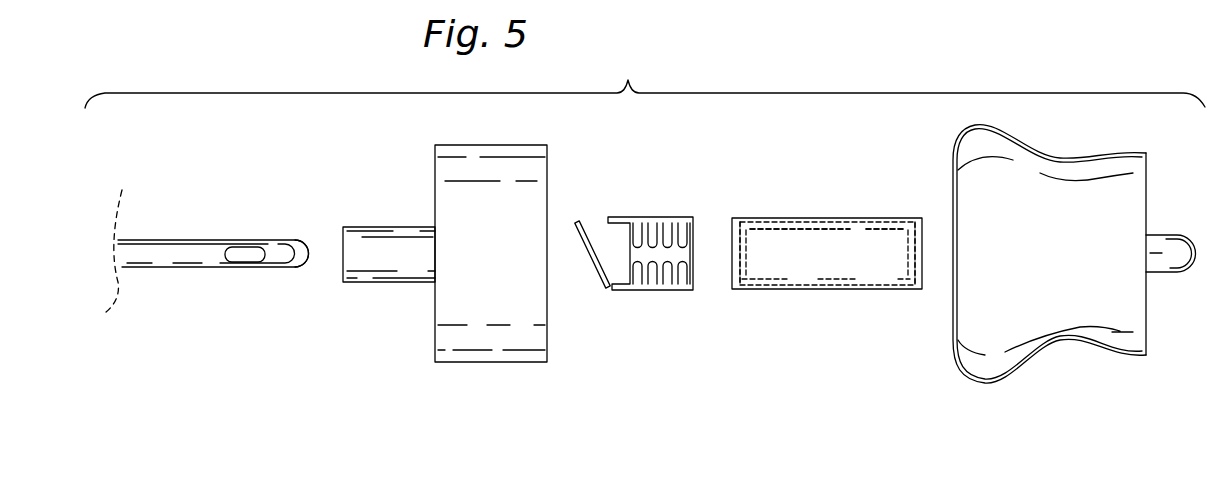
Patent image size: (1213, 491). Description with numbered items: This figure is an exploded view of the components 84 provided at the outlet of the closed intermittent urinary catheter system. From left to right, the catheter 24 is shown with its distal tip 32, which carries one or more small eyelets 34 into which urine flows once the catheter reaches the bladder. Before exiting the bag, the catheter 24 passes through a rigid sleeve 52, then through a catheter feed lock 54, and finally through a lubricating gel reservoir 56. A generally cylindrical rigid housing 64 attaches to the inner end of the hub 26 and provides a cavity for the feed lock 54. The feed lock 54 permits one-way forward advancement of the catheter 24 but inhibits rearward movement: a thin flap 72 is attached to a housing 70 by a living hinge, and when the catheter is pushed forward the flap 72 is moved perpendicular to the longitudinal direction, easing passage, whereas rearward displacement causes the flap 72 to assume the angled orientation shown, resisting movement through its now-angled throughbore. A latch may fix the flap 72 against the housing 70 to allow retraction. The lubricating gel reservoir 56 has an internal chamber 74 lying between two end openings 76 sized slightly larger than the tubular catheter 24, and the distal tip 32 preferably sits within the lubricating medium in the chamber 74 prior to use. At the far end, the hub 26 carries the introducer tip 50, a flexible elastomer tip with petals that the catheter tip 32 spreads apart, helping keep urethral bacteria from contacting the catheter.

The fastening assembly 84 is at (645, 78).
The catheter 24 is at (158, 268).
The distal tip 32 is at (290, 268).
The eyelets 34 is at (238, 248).
The rigid sleeve 52 is at (363, 228).
The rigid housing 64 is at (497, 363).
The catheter feed lock 54 is at (650, 263).
The housing 70 is at (650, 217).
The flap 72 is at (576, 221).
The lubricating gel reservoir 56 is at (800, 290).
The internal chamber 74 is at (800, 218).
The end openings 76 is at (732, 250).
The hub 26 is at (1040, 357).
The introducer tip 50 is at (1175, 272).